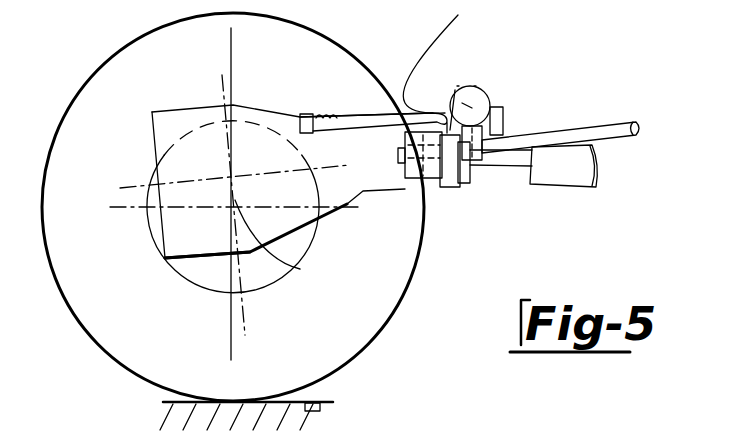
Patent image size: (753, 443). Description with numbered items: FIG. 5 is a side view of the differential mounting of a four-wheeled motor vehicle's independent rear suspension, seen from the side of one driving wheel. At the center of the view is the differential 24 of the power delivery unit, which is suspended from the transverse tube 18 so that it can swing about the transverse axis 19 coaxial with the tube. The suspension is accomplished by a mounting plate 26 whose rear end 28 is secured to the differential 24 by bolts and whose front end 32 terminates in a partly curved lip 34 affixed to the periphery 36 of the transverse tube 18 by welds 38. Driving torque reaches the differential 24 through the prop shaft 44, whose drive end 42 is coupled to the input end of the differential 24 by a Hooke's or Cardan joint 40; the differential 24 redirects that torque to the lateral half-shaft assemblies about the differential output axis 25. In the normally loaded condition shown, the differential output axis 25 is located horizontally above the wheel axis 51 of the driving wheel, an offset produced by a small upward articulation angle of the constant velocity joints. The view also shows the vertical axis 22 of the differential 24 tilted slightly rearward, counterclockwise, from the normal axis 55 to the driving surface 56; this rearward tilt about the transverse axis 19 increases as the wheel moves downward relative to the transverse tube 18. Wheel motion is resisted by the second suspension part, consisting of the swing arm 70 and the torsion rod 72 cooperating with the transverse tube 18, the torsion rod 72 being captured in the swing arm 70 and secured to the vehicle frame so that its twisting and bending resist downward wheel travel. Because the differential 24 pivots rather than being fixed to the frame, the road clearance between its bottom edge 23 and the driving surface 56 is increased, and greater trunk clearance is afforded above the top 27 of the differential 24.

The transverse tube 18 is at (503, 109).
The transverse axis 19 is at (459, 86).
The vertical axis 22 is at (245, 335).
The bottom edge 23 is at (182, 260).
The differential 24 is at (173, 233).
The differential output axis 25 is at (233, 175).
The mounting plate 26 is at (365, 113).
The top 27 is at (167, 110).
The rear end 28 is at (302, 113).
The front end 32 is at (474, 86).
The partly curved lip 34 is at (457, 86).
The periphery 36 is at (446, 56).
The welds 38 is at (488, 94).
The Cardan joint 40 is at (448, 188).
The drive end 42 is at (510, 168).
The prop shaft 44 is at (585, 175).
The wheel axis 51 is at (300, 269).
The normal axis 55 is at (231, 337).
The driving surface 56 is at (333, 401).
The swing arm 70 is at (433, 178).
The torsion rod 72 is at (630, 118).